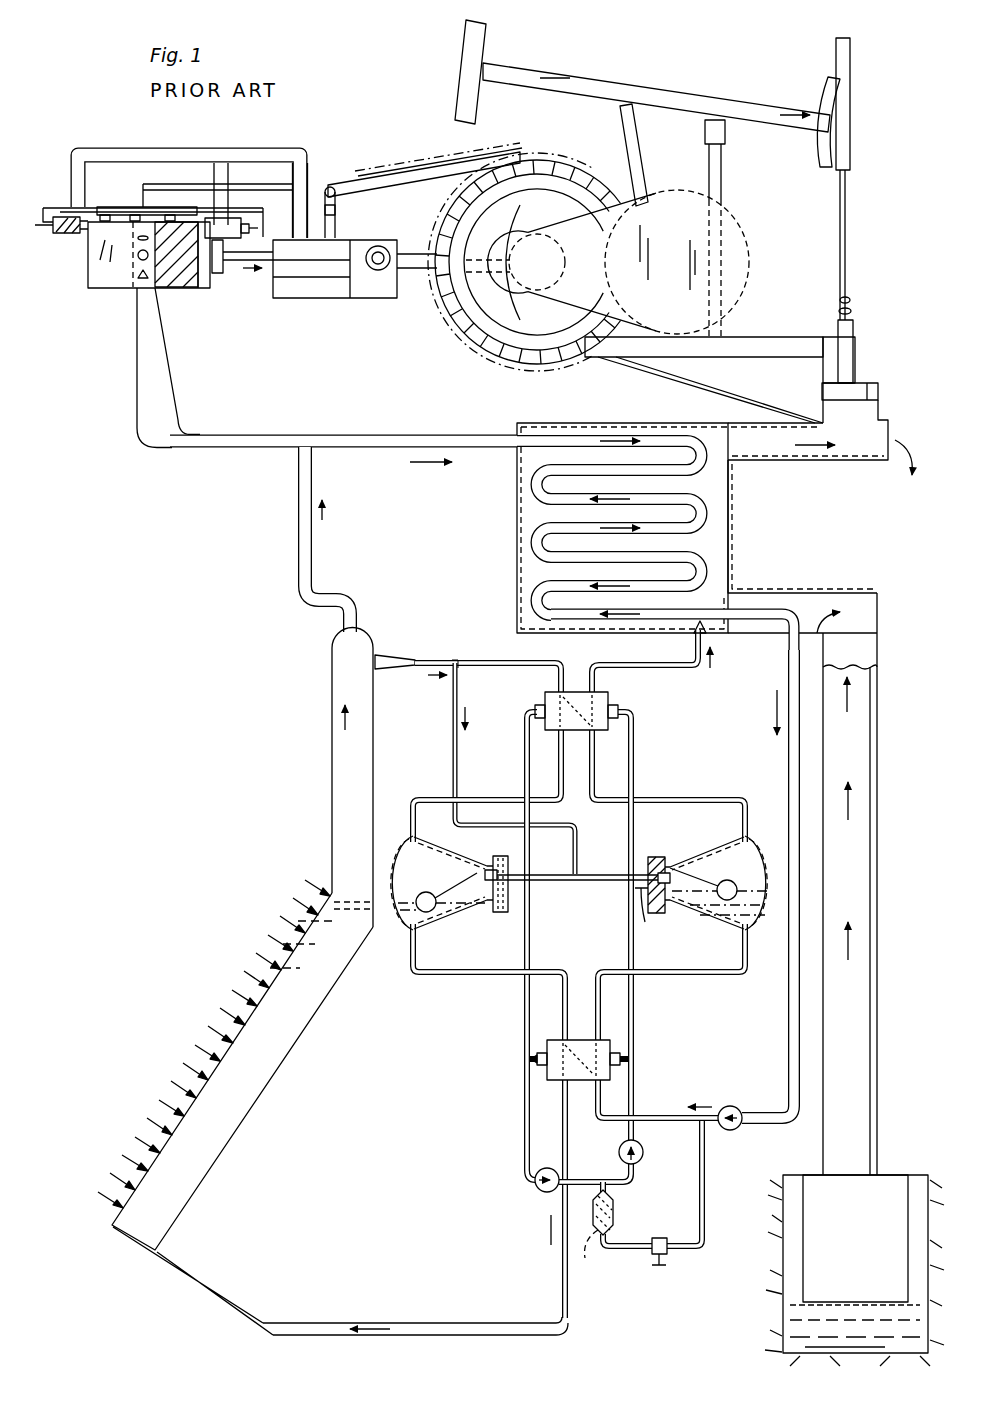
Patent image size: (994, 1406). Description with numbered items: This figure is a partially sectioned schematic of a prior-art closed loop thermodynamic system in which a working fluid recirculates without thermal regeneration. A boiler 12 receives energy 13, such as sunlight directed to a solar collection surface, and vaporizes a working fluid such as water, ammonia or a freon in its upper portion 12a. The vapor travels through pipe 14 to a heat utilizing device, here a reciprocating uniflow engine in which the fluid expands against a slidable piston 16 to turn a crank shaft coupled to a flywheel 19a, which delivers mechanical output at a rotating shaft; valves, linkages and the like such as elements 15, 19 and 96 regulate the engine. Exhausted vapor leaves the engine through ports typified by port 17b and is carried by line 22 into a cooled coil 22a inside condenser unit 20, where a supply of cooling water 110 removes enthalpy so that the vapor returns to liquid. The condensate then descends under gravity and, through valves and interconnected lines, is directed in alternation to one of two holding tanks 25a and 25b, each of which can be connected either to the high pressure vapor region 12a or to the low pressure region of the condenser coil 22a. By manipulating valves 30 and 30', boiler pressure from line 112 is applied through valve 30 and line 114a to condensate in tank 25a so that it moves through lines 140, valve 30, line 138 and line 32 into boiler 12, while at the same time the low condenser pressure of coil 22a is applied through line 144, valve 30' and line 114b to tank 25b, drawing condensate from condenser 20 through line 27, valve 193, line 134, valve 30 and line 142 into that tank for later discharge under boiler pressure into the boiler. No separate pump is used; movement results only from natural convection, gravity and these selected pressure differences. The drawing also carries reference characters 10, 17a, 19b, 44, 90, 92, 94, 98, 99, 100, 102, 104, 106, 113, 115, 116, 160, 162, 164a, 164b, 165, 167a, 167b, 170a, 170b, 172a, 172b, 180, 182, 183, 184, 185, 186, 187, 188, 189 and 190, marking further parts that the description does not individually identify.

The system 10 is at (140, 575).
The boiler 12 is at (300, 1079).
The upper portion 12a is at (305, 678).
The energy 13 is at (228, 1010).
The pipe 14 is at (299, 486).
The engine regulating element 15 is at (98, 298).
The slidable piston 16 is at (355, 290).
The engine fittings 17a is at (72, 222).
The port 17b is at (140, 283).
The engine regulating element 19 is at (626, 50).
The flywheel 19a is at (470, 362).
The well tubing and pump 19b is at (888, 1183).
The condenser unit 20 is at (515, 526).
The line 22 is at (360, 434).
The condenser coil 22a is at (616, 470).
The line 27 is at (788, 755).
The valve 30 is at (622, 1057).
The valve 30' is at (619, 703).
The condensate return pipe 32 is at (440, 1323).
The drive shaft 44 is at (237, 262).
The exhaust pipe 90 is at (283, 172).
The control rod 92 is at (141, 190).
The lever 94 is at (305, 190).
The engine regulating element 96 is at (387, 178).
The lever arm 98 is at (333, 190).
The guide rod 99 is at (505, 155).
The belt drive 100 is at (582, 183).
The gear ring 102 is at (495, 188).
The flywheel disc 104 is at (473, 215).
The flywheel shaft 106 is at (470, 295).
The cooling water 110 is at (726, 602).
The line 112 is at (428, 660).
The crank eye 113 is at (350, 240).
The line 114a is at (480, 799).
The line 114b is at (668, 799).
The crank rod 115 is at (415, 272).
The link 116 is at (340, 212).
The line 134 is at (650, 1115).
The line 138 is at (560, 1090).
The line 140 is at (420, 975).
The line 142 is at (685, 975).
The line 144 is at (622, 663).
The feed pipe 160 is at (452, 698).
The tee junction 162 is at (457, 660).
The actuating rod 164a is at (545, 882).
The rod feed pipe 164b is at (597, 873).
The float 165 is at (466, 908).
The left diaphragm plate 167a is at (500, 912).
The right diaphragm plate 167b is at (637, 893).
The lower left valve line 170a is at (522, 990).
The upper left valve line 170b is at (524, 735).
The lower right valve line 172a is at (628, 940).
The upper right valve line 172b is at (636, 820).
The drain pipe 180 is at (525, 1128).
The drain pipe 182 is at (628, 1133).
The valve port 183 is at (526, 1060).
The filter 184 is at (625, 1225).
The cross pipe 185 is at (603, 1181).
The branch fitting 186 is at (608, 1186).
The bypass 187 is at (593, 1254).
The return pipe 188 is at (705, 1222).
The flow direction 189 is at (705, 1112).
The check valve 190 is at (535, 1185).
The valve 193 is at (735, 1128).
The holding tank 25a is at (402, 947).
The holding tank 25b is at (780, 970).